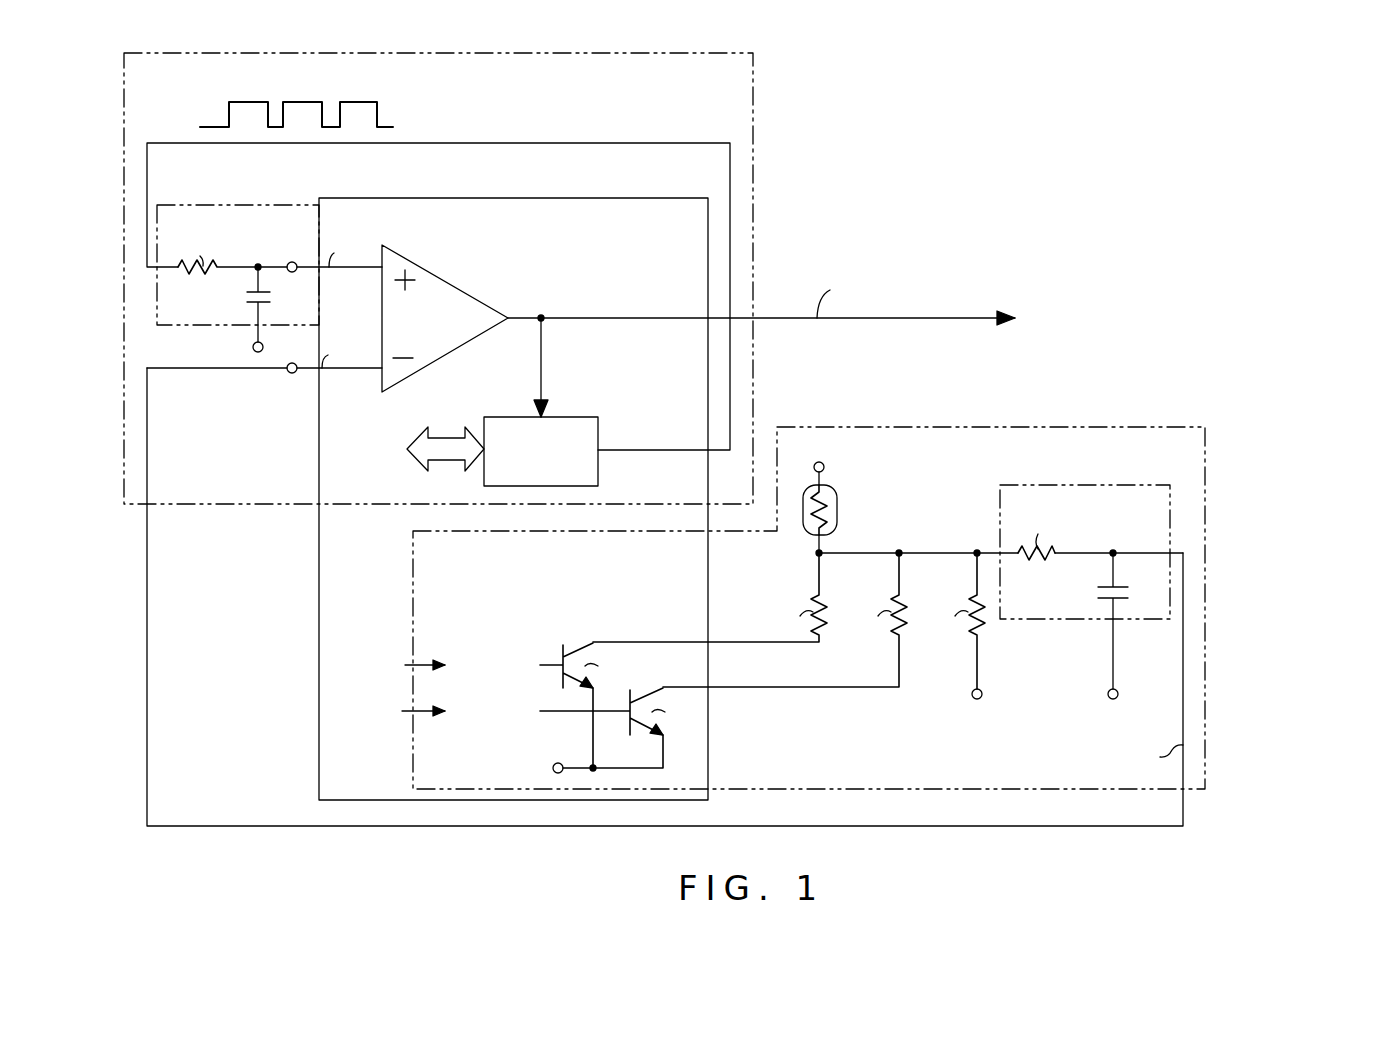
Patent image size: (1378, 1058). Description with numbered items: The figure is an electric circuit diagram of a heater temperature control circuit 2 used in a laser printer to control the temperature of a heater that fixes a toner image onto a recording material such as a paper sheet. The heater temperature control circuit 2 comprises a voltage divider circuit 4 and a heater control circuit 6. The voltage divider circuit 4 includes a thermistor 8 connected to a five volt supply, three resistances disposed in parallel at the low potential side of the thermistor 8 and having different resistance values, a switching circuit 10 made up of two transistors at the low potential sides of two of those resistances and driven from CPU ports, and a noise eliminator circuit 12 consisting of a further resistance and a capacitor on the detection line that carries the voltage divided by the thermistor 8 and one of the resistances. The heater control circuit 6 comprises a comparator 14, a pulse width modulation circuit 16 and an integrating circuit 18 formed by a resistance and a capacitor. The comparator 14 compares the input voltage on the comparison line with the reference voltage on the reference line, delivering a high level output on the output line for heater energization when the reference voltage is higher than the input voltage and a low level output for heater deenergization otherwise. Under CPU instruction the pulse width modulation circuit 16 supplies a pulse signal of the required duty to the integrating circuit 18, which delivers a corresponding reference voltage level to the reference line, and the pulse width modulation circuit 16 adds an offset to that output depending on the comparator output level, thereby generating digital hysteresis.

The heater temperature control circuit 2 is at (868, 174).
The voltage divider circuit 4 is at (1127, 427).
The heater control circuit 6 is at (753, 150).
The thermistor 8 is at (837, 507).
The switching circuit 10 is at (678, 755).
The noise eliminator circuit 12 is at (1115, 485).
The comparator 14 is at (452, 288).
The pulse width modulation circuit 16 is at (503, 417).
The integrating circuit 18 is at (242, 204).